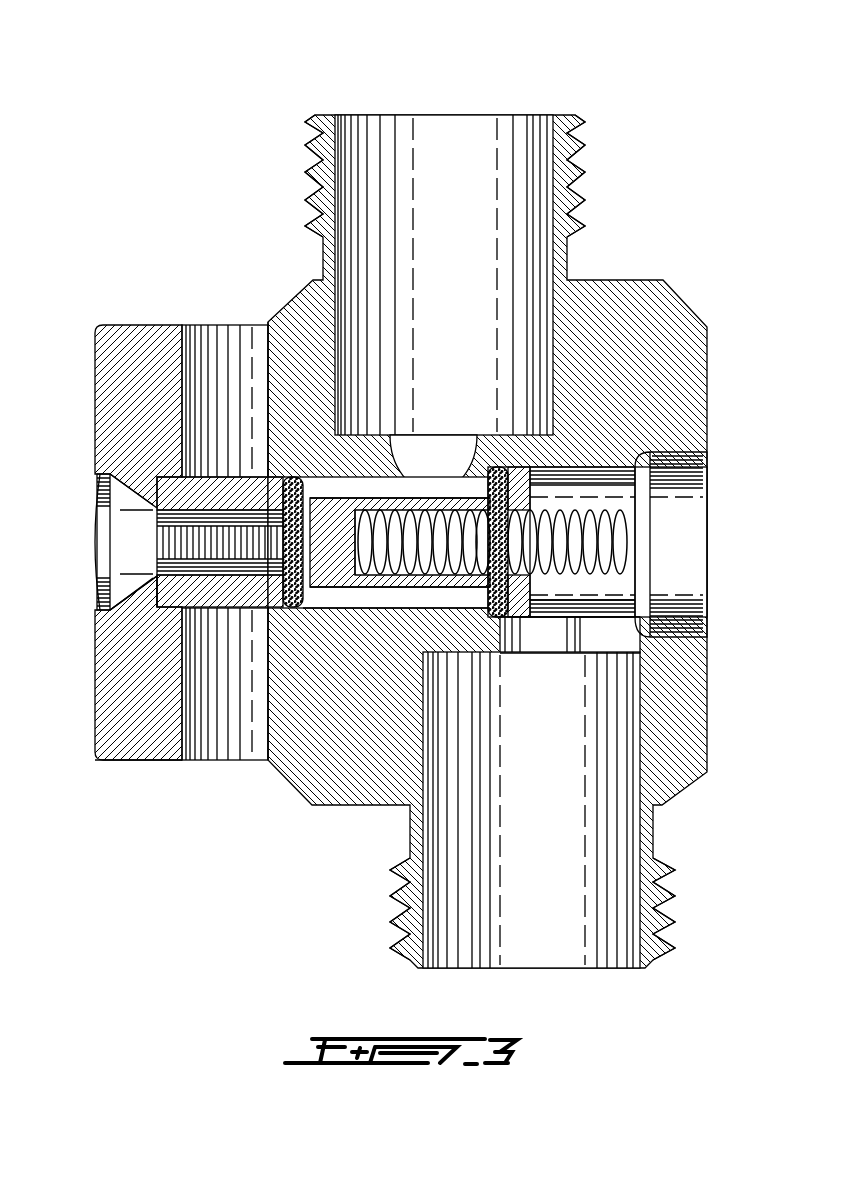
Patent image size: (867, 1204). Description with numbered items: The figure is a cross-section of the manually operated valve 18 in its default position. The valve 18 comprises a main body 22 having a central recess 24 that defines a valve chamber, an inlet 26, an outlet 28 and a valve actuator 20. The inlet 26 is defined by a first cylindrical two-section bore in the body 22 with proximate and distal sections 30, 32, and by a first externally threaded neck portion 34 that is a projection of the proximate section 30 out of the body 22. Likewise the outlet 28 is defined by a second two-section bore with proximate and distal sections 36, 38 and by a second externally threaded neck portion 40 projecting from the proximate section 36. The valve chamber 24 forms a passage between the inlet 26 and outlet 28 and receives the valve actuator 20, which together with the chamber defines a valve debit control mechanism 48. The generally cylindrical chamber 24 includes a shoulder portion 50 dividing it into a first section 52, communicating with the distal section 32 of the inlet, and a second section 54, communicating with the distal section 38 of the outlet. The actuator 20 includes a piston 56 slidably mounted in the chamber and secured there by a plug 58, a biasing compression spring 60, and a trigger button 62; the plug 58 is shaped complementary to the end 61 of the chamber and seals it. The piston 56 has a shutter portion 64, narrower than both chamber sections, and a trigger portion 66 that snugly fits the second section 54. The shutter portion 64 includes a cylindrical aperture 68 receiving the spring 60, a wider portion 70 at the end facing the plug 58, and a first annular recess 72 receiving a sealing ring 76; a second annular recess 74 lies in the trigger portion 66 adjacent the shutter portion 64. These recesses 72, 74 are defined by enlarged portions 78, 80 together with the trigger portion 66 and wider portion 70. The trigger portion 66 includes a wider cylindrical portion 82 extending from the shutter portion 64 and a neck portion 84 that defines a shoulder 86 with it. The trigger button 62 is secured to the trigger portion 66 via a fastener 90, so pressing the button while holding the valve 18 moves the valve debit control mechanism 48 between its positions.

The valve 18 is at (605, 110).
The valve actuator 20 is at (403, 595).
The main body 22 is at (638, 333).
The central recess 24 is at (350, 600).
The inlet 26 is at (577, 750).
The outlet 28 is at (395, 150).
The proximate section 30 is at (548, 908).
The distal section 32 is at (557, 633).
The first externally threaded neck portion 34 is at (655, 830).
The proximate section 36 is at (460, 150).
The distal section 38 is at (447, 453).
The second externally threaded neck portion 40 is at (330, 190).
The valve debit control mechanism 48 is at (195, 478).
The shoulder portion 50 is at (520, 605).
The first section 52 is at (640, 470).
The second section 54 is at (317, 478).
The piston 56 is at (226, 478).
The plug 58 is at (677, 543).
The compression spring 60 is at (612, 520).
The end 61 is at (690, 595).
The trigger button 62 is at (120, 352).
The shutter portion 64 is at (300, 545).
The trigger portion 66 is at (185, 605).
The cylindrical aperture 68 is at (347, 483).
The wider portion 70 is at (537, 640).
The first annular recess 72 is at (268, 400).
The second annular recess 74 is at (455, 612).
The sealing ring 76 is at (600, 487).
The enlarged portion 78 is at (262, 700).
The enlarged portion 80 is at (505, 478).
The wider cylindrical portion 82 is at (142, 760).
The neck portion 84 is at (185, 600).
The shoulder 86 is at (210, 608).
The fastener 90 is at (130, 560).